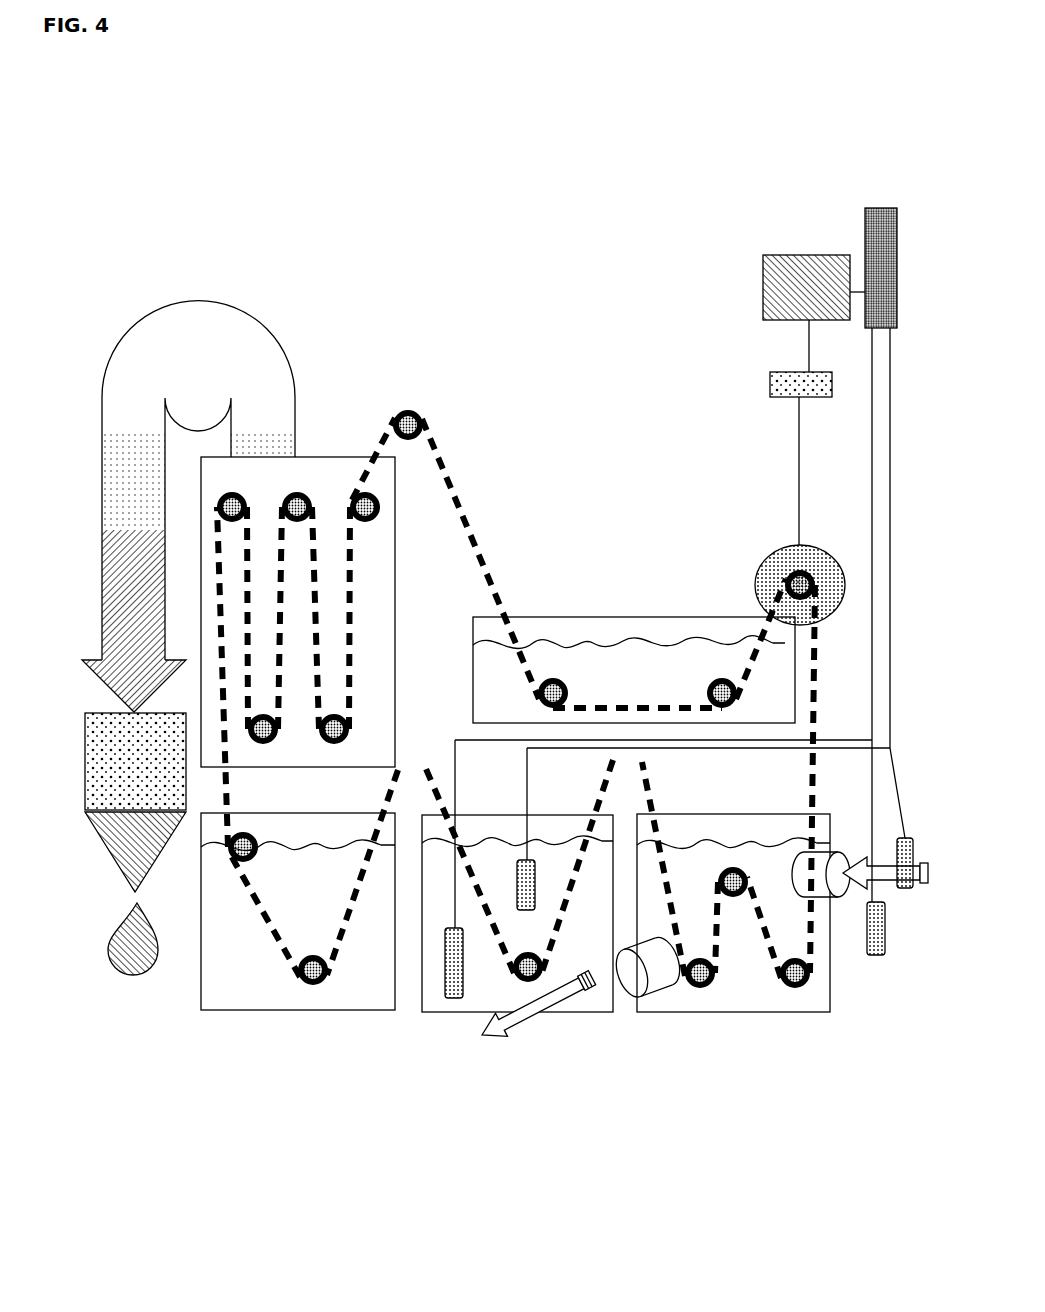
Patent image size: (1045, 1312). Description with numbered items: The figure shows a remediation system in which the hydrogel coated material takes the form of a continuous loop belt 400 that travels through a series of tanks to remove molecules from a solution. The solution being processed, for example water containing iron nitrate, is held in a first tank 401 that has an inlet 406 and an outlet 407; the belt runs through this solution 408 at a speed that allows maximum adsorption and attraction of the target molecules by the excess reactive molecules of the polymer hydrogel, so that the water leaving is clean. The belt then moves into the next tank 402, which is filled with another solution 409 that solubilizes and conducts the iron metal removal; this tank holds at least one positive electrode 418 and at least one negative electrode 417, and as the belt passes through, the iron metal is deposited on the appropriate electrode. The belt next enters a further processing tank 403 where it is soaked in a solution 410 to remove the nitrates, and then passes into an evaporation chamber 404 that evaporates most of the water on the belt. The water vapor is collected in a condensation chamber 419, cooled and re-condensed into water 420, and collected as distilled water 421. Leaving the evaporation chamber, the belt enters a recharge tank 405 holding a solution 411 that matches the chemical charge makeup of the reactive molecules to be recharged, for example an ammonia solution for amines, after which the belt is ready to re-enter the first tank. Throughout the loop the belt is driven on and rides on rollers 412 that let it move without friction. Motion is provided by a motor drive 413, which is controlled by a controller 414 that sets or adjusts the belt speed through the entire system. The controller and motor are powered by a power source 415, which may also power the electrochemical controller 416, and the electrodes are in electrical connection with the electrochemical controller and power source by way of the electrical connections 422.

The conveyor belt 400 is at (818, 678).
The tank 401 is at (758, 960).
The next tank 402 is at (459, 974).
The processing tank 403 is at (276, 961).
The evaporation chamber 404 is at (320, 457).
The recharge tank 405 is at (634, 590).
The inlet 406 is at (845, 884).
The outlet 407 is at (660, 980).
The solution 408 is at (750, 972).
The solution 409 is at (578, 978).
The solution 410 is at (240, 981).
The solution 411 is at (625, 672).
The rollers 412 is at (420, 421).
The motor drive 413 is at (766, 558).
The controller 414 is at (768, 378).
The power source 415 is at (760, 255).
The electrochemical controller 416 is at (863, 208).
The negative electrode 417 is at (442, 983).
The positive electrode 418 is at (517, 912).
The condensation chamber 419 is at (122, 333).
The water 420 is at (115, 757).
The distilled water 421 is at (130, 945).
The power wires 422 is at (805, 468).